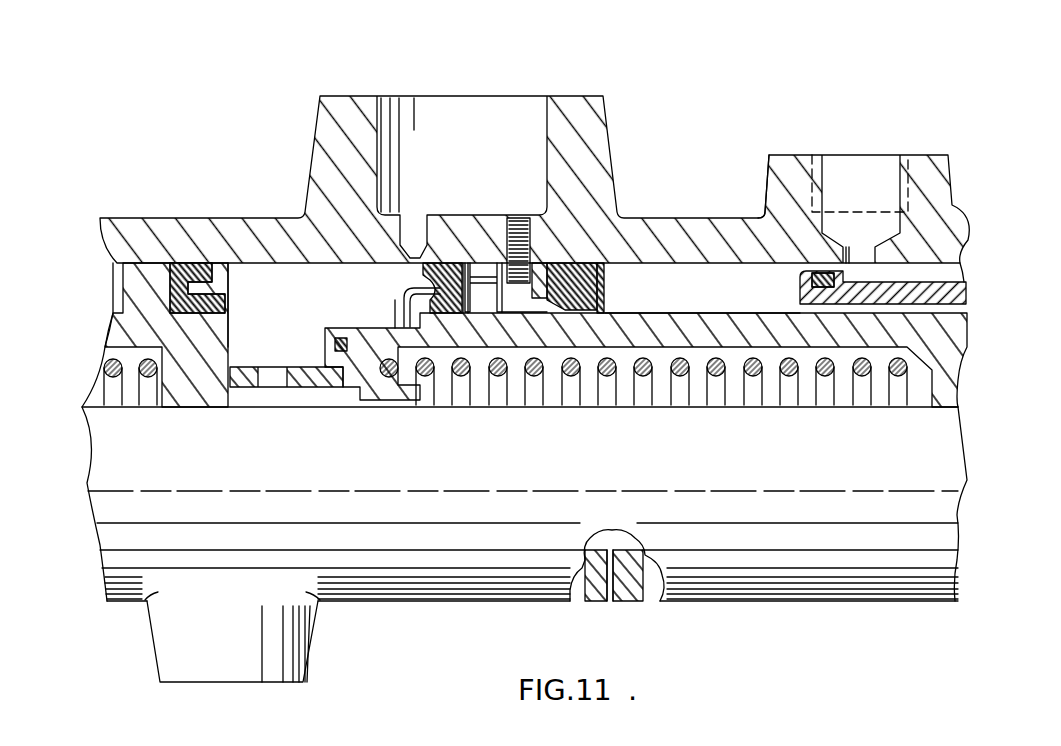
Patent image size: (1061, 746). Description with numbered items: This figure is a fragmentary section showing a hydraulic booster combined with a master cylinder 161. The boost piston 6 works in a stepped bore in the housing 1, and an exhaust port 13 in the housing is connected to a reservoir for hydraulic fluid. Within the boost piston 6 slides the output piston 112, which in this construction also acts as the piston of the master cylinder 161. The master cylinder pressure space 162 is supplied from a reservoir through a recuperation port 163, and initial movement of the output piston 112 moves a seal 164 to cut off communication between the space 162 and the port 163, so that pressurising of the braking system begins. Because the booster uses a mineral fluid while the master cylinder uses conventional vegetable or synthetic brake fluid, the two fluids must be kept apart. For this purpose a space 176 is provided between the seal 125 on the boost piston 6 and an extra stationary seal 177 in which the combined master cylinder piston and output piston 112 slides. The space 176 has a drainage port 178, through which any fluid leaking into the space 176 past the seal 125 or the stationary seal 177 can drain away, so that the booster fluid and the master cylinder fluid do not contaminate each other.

The housing 1 is at (920, 155).
The boost piston 6 is at (950, 292).
The exhaust port 13 is at (856, 186).
The output piston 112 is at (936, 338).
The seal 125 is at (763, 213).
The master cylinder 161 is at (217, 215).
The master cylinder pressure space 162 is at (297, 314).
The recuperation port 163 is at (414, 260).
The seal 164 is at (403, 301).
The space 176 is at (700, 296).
The stationary seal 177 is at (593, 294).
The drainage port 178 is at (597, 592).